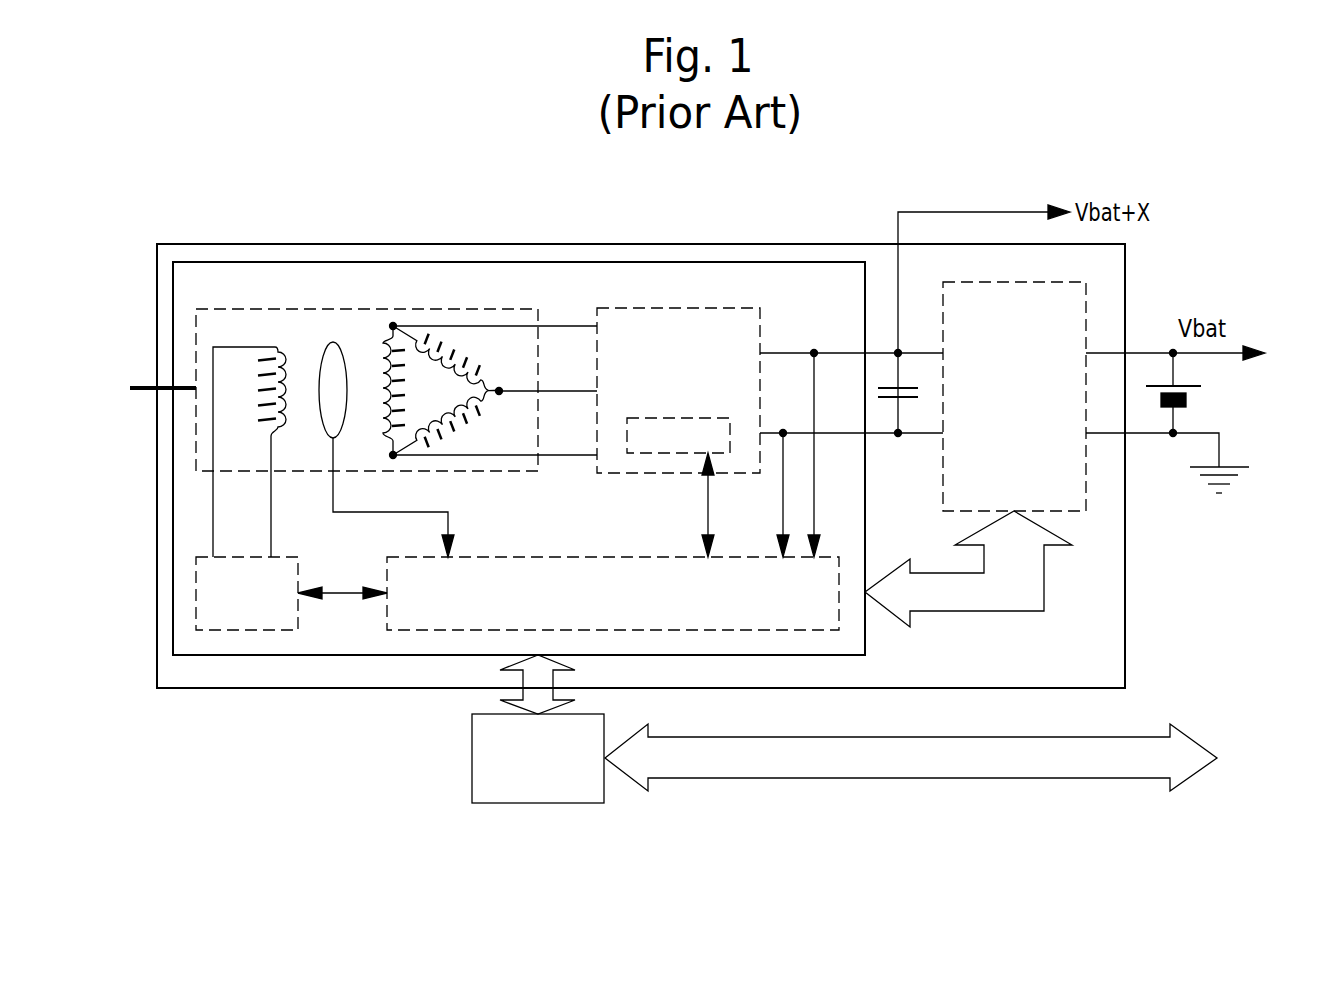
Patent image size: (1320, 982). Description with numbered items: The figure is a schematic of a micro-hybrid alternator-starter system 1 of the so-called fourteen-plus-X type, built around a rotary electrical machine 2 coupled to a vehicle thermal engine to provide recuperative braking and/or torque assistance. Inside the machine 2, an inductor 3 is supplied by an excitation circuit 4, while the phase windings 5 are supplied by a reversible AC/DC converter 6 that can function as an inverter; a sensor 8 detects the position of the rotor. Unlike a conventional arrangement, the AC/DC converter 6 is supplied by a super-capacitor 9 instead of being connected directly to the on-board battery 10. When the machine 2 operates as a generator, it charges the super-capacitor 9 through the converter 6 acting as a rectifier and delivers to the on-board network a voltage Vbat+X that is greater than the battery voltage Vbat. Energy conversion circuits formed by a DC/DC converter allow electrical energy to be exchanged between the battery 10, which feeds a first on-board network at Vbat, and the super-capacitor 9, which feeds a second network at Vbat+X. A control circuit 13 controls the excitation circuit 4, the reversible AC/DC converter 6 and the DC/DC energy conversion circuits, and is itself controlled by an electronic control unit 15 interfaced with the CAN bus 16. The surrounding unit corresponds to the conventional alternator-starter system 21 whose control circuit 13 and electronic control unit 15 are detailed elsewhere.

The alternator-starter system 1 is at (385, 228).
The rotary electrical machine 2 is at (238, 292).
The inductor 3 is at (275, 347).
The excitation circuit 4 is at (283, 573).
The phase windings 5 is at (406, 362).
The reversible AC/DC converter 6 is at (668, 323).
The sensor 8 is at (333, 342).
The super-capacitor 9 is at (878, 392).
The on-board battery 10 is at (1190, 390).
The control circuit 13 is at (548, 567).
The electronic control unit 15 is at (472, 757).
The CAN bus 16 is at (1036, 778).
The alternator-starter system 21 is at (468, 245).